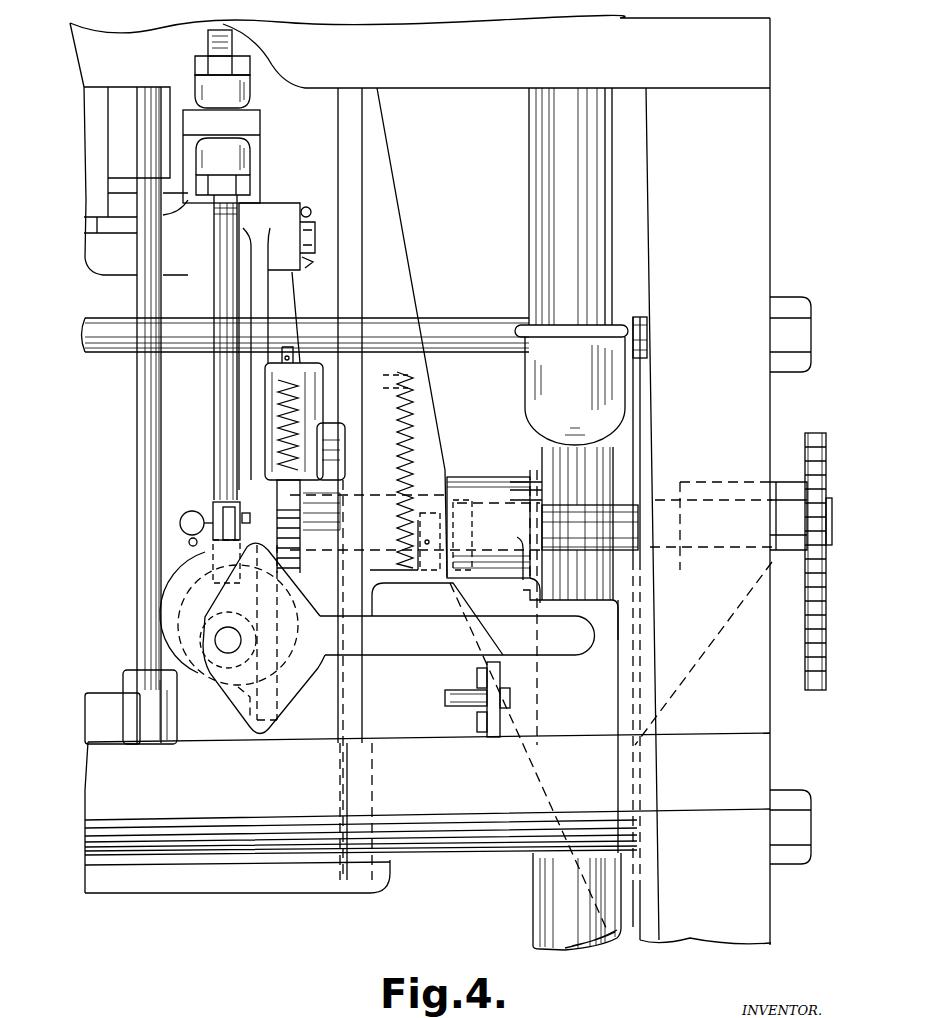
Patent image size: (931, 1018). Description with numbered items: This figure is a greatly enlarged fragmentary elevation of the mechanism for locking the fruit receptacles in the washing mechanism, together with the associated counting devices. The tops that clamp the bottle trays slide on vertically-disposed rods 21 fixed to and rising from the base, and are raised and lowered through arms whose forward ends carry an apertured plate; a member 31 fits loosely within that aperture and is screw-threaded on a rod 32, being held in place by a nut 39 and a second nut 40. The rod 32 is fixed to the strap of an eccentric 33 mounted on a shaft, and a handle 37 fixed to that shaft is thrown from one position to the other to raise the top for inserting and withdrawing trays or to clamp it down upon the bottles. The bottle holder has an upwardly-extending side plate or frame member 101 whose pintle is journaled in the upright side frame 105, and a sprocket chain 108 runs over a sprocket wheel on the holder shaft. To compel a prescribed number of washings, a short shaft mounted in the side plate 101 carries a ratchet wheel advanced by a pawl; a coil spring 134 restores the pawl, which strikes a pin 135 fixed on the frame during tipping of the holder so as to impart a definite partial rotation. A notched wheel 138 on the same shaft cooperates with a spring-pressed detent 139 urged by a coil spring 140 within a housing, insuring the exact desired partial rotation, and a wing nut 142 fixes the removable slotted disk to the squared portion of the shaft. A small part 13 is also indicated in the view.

The shaft 13 is at (458, 537).
The vertically-disposed rods 21 is at (137, 466).
The member 31 is at (252, 97).
The rod 32 is at (218, 382).
The eccentric 33 is at (192, 604).
The handle 37 is at (410, 660).
The nut 39 is at (195, 66).
The nut 40 is at (252, 187).
The side plate or frame member 101 is at (398, 260).
The upright side frame 105 is at (780, 893).
The sprocket chain 108 is at (816, 690).
The coil spring 134 is at (412, 428).
The pin 135 is at (447, 700).
The notched wheel 138 is at (363, 600).
The spring-pressed detent 139 is at (305, 495).
The coil spring 140 is at (273, 402).
The wing nut 142 is at (199, 510).